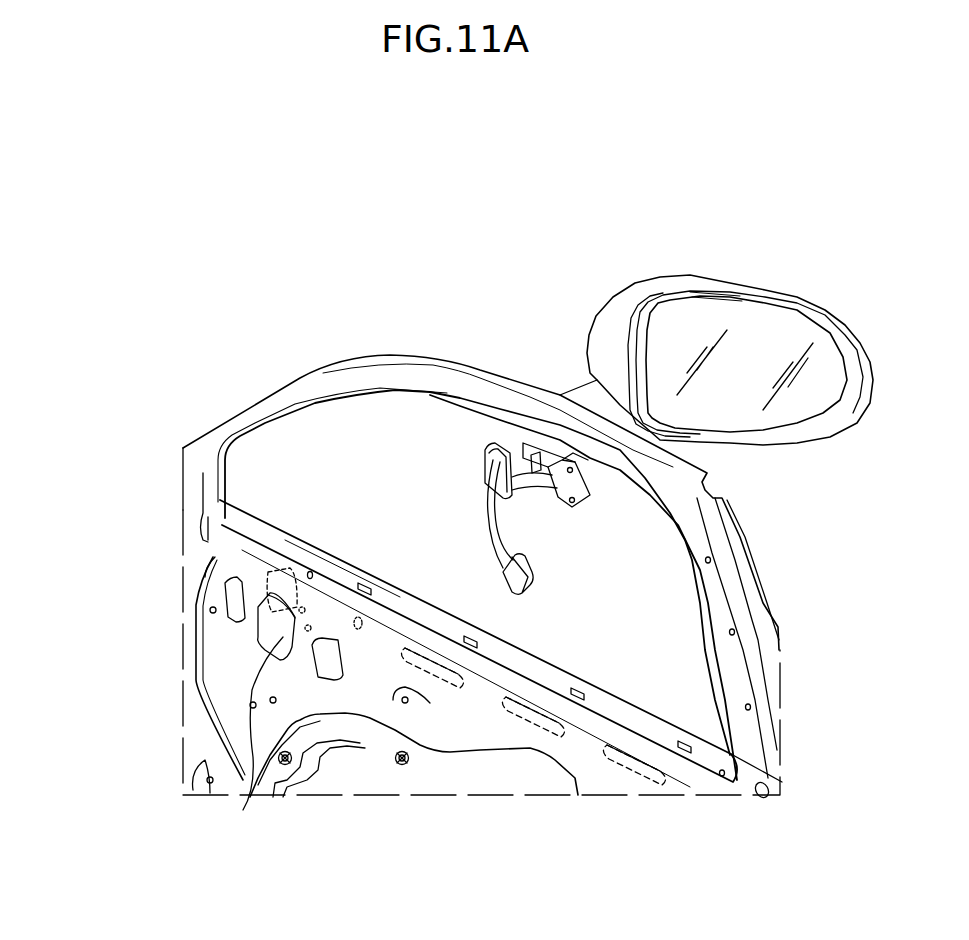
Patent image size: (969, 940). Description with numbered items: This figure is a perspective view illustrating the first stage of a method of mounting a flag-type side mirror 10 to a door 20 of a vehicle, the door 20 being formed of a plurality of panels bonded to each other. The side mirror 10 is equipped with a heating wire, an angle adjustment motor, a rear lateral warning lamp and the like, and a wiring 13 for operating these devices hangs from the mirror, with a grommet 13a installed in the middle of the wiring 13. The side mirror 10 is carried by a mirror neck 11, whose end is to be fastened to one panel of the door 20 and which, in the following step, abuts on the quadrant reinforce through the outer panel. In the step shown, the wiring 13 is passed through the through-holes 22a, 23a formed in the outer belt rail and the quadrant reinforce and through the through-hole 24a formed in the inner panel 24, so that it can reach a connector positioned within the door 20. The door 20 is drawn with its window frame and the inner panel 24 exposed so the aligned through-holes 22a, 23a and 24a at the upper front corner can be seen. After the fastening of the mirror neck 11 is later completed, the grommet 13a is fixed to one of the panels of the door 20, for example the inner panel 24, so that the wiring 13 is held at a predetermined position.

The side mirror 10 is at (760, 347).
The mirror neck 11 is at (590, 473).
The wiring 13 is at (600, 585).
The grommet 13a is at (483, 466).
The door 20 is at (626, 798).
The through-hole 22a is at (160, 614).
The through-hole 23a is at (280, 607).
The inner panel 24 is at (368, 700).
The through-hole 24a is at (252, 803).